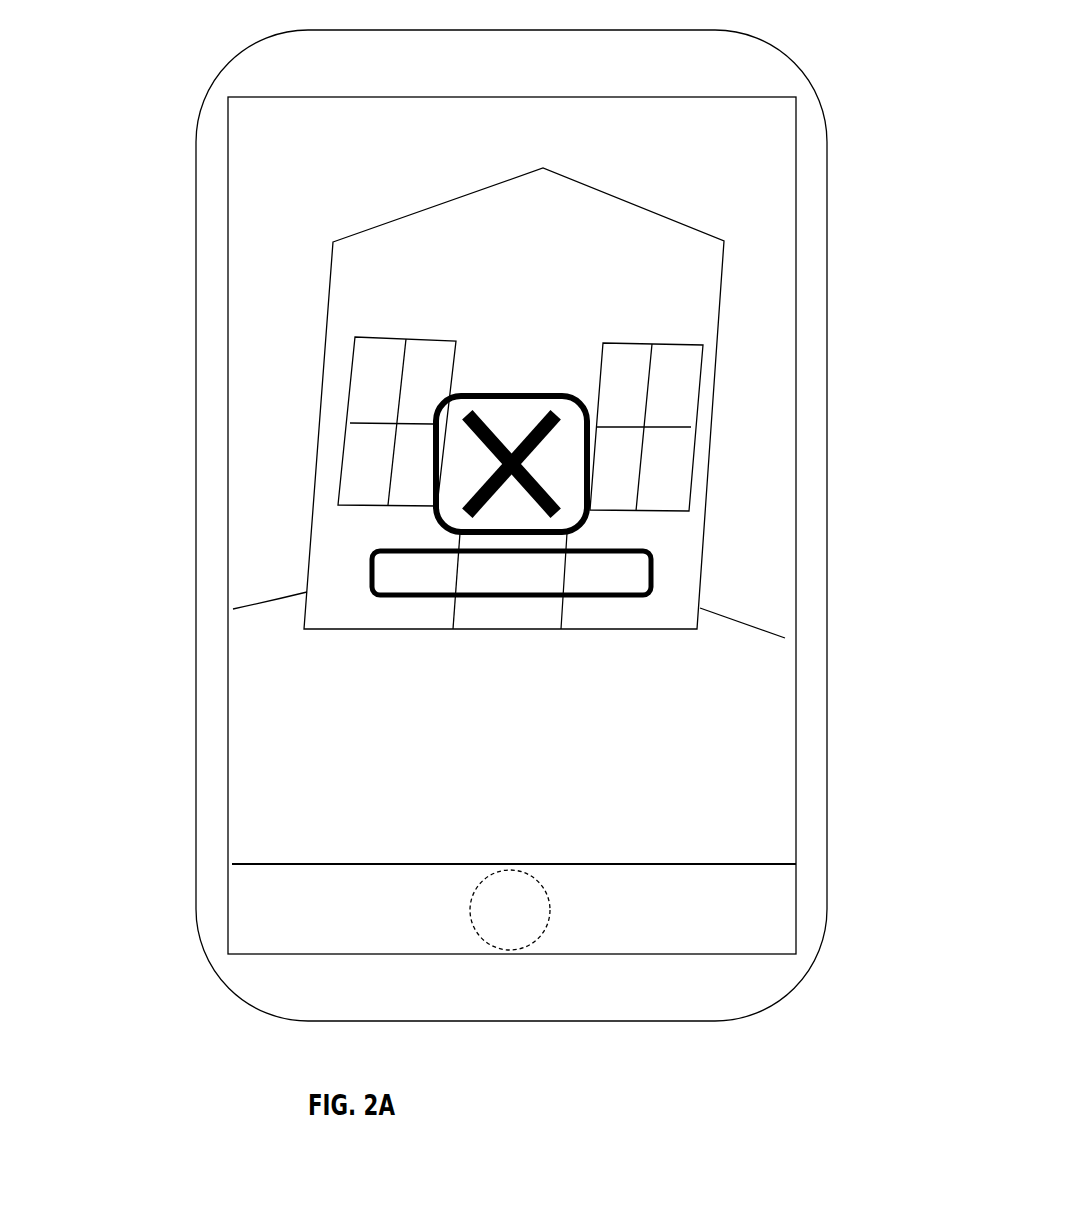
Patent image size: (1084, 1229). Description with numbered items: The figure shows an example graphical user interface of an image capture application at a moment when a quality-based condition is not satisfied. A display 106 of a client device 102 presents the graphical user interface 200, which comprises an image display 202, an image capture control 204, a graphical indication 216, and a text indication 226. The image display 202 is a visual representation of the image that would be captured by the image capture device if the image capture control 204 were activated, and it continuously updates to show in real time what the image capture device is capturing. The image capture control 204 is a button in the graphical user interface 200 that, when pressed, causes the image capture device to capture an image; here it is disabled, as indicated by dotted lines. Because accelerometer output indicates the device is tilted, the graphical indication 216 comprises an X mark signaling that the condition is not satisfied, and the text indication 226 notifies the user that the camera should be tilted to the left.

The client device 102 is at (511, 511).
The display 106 is at (512, 512).
The graphical user interface 200 is at (229, 182).
The image display 202 is at (509, 448).
The image capture control 204 is at (553, 940).
The graphical indication 216 is at (592, 386).
The text indication 226 is at (670, 587).